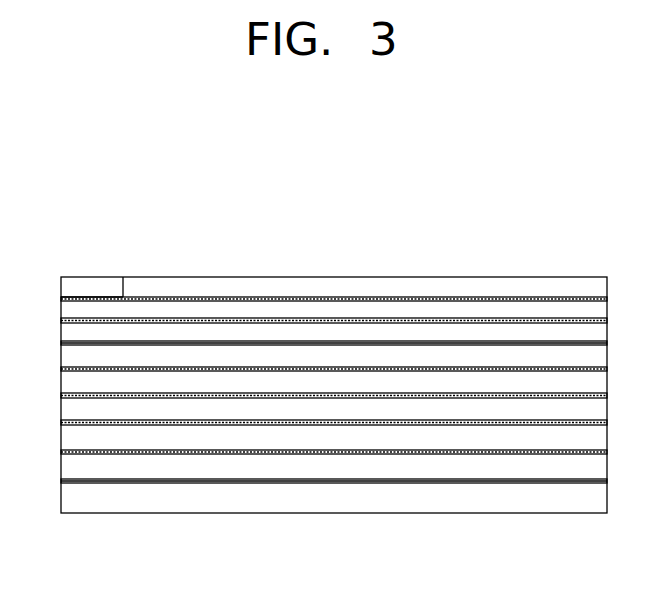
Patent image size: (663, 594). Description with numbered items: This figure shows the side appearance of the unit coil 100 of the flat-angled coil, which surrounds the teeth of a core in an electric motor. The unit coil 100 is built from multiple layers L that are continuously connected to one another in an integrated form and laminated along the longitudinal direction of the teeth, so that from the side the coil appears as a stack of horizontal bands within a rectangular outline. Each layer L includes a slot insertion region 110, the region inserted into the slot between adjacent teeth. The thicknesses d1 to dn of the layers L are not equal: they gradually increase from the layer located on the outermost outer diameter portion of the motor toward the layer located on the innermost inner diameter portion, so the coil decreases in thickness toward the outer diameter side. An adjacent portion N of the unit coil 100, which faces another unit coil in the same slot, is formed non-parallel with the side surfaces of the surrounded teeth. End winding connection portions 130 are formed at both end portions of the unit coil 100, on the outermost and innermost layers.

The unit coil 100 is at (103, 135).
The slot insertion region 110 is at (523, 252).
The end winding connection portion 130 is at (90, 271).
The layer L is at (60, 318).
The adjacent portion N is at (247, 427).
The thickness of first layer d1 is at (450, 330).
The thickness of n-th layer dn is at (557, 450).